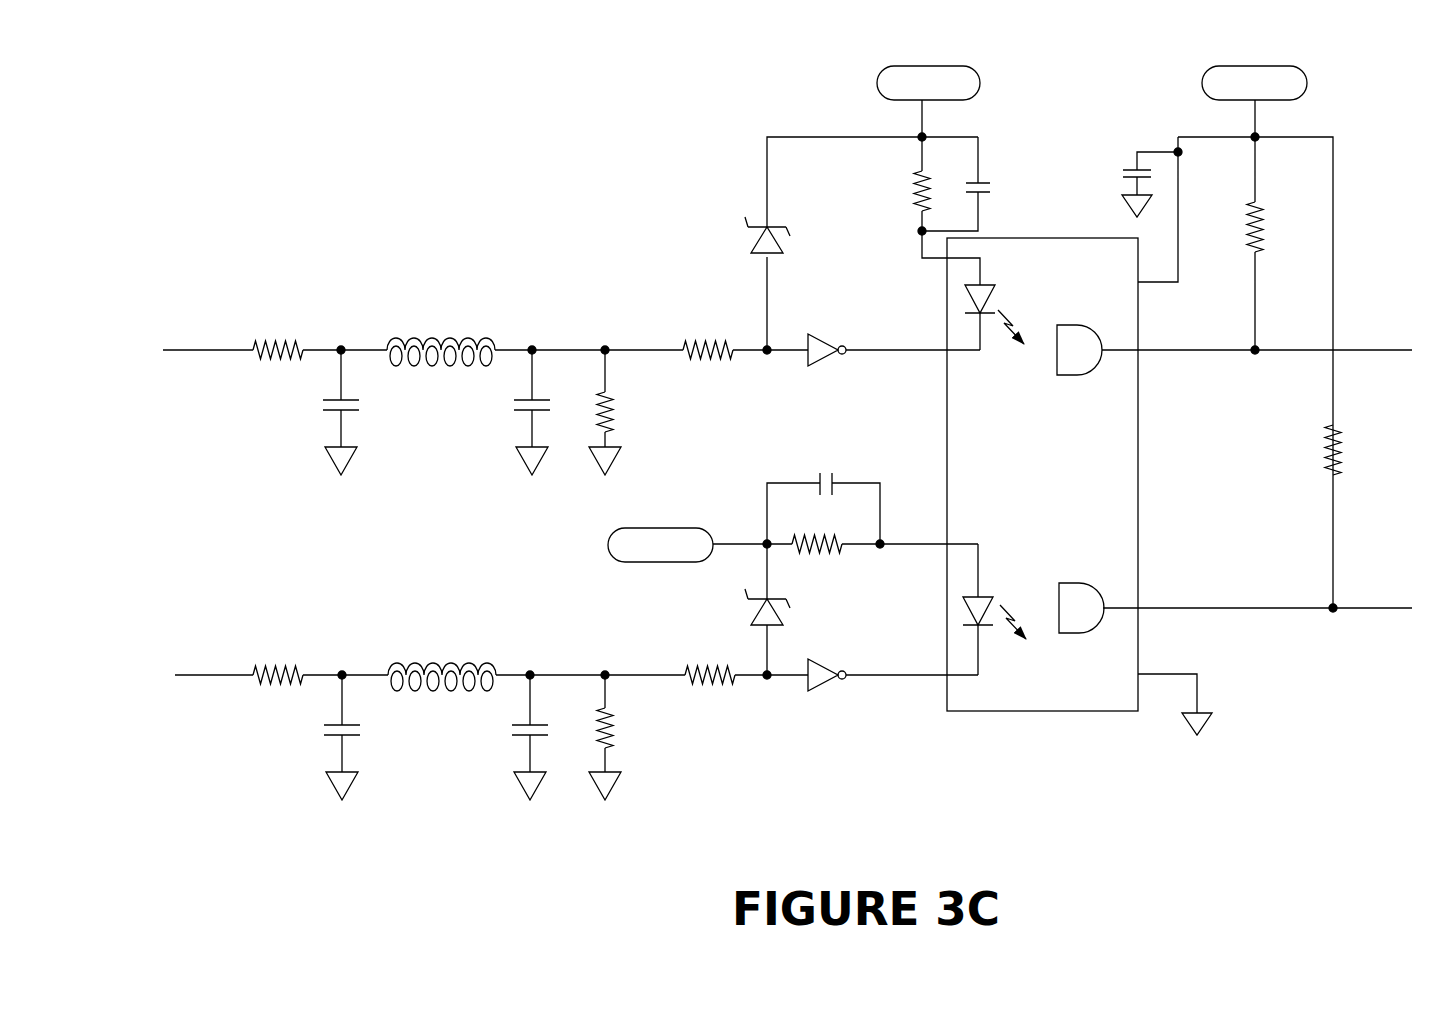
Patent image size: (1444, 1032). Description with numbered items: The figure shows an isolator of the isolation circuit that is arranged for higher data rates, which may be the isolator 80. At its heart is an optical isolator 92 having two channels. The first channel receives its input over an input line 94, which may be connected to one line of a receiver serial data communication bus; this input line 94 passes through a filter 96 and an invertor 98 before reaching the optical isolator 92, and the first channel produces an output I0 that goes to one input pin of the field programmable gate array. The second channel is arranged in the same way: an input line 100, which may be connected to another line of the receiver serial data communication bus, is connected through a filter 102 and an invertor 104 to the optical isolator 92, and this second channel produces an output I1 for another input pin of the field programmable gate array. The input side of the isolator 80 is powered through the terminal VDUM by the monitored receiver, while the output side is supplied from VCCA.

The isolator 80 is at (1334, 65).
The optical isolator 92 is at (960, 712).
The input line 94 is at (200, 352).
The filter 96 is at (450, 318).
The invertor 98 is at (823, 338).
The input line 100 is at (200, 677).
The filter 102 is at (430, 640).
The invertor 104 is at (820, 688).